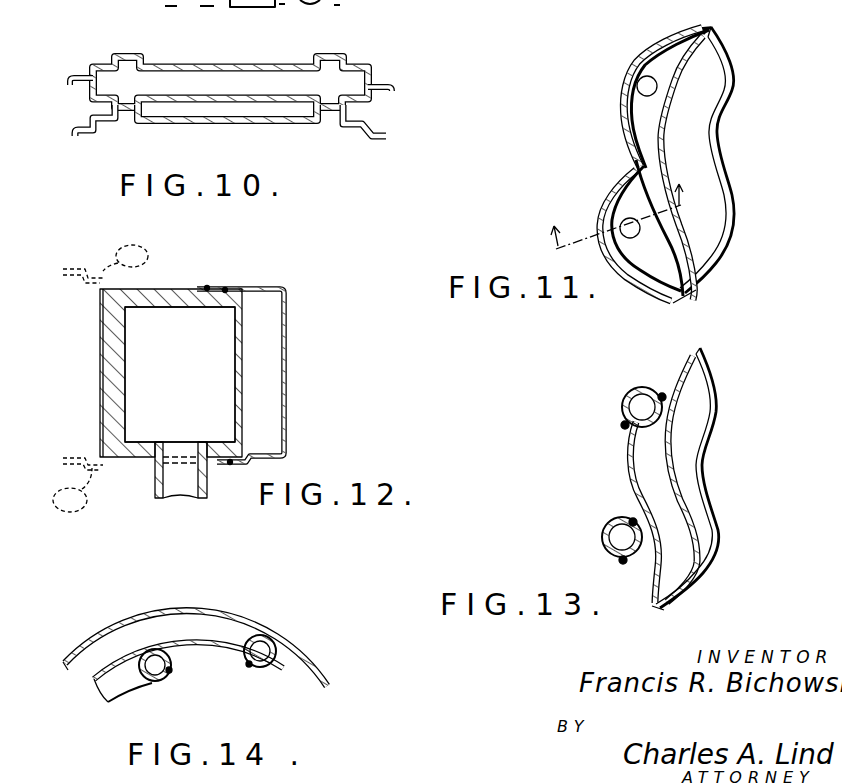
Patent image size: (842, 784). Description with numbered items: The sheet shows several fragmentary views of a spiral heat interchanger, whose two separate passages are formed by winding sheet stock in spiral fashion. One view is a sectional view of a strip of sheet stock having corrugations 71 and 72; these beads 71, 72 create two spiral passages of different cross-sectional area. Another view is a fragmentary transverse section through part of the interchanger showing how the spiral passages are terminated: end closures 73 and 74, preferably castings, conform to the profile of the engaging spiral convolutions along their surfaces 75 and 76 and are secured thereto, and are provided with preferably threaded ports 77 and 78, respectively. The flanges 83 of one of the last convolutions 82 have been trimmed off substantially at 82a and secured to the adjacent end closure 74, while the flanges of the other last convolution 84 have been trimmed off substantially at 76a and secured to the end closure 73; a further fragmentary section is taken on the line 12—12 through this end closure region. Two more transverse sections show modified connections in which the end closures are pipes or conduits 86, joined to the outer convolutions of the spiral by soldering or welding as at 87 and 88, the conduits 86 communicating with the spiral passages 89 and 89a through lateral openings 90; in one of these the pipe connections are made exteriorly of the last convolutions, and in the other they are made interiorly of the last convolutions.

In FIG. 11, the section line 12- 12 is at (624, 228).
In FIG. 10, the corrugation 71 is at (138, 53).
In FIG. 10, the corrugation 72 is at (323, 54).
In FIG. 11, the end closure 73 is at (640, 103).
In FIG. 12, the end closure 74 is at (128, 363).
In FIG. 11, the end closure 74 is at (632, 203).
In FIG. 11, the surface 75 is at (678, 63).
In FIG. 12, the surface 76 is at (235, 435).
In FIG. 11, the surface 76 is at (699, 287).
In FIG. 11, the trim location 76a is at (657, 163).
In FIG. 11, the threaded port 77 is at (657, 89).
In FIG. 12, the threaded port 78 is at (187, 478).
In FIG. 11, the threaded port 78 is at (637, 232).
In FIG. 12, the last convolution 82 is at (100, 360).
In FIG. 11, the last convolution 82 is at (631, 284).
In FIG. 11, the trim location 82a is at (677, 300).
In FIG. 12, the flanges 83 is at (230, 478).
In FIG. 11, the last convolution 84 is at (621, 117).
In FIG. 13, the pipe or conduit 86 is at (631, 390).
In FIG. 14, the pipe or conduit 86 is at (169, 670).
In FIG. 13, the solder or weld joint 87 is at (663, 393).
In FIG. 14, the solder or weld joint 87 is at (249, 665).
In FIG. 13, the solder or weld joint 88 is at (622, 424).
In FIG. 14, the solder or weld joint 88 is at (167, 652).
In FIG. 13, the spiral passage 89 is at (667, 479).
In FIG. 13, the spiral passage 89a is at (665, 589).
In FIG. 13, the lateral opening 90 is at (650, 432).
In FIG. 14, the lateral opening 90 is at (248, 640).